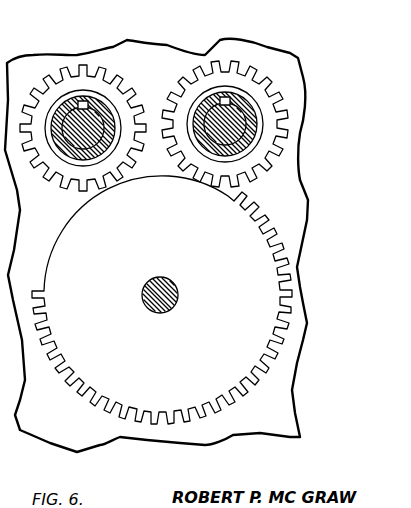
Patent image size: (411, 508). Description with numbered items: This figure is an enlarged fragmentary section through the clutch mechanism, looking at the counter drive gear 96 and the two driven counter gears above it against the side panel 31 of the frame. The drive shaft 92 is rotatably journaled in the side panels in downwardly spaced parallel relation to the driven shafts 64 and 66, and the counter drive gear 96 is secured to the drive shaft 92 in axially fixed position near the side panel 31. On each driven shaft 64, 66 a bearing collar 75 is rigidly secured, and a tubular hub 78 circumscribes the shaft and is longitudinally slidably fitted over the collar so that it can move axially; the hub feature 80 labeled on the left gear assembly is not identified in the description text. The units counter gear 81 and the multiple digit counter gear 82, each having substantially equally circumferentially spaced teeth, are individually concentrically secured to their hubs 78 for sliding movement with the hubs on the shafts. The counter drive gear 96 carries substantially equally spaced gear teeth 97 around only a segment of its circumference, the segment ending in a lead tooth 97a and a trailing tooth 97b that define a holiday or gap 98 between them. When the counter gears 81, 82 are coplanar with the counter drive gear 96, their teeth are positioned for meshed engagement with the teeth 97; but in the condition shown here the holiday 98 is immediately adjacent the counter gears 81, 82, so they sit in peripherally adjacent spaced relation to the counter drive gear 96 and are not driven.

The side panel 31 is at (272, 406).
The driven shaft 64 is at (62, 136).
The driven shaft 66 is at (186, 158).
The bearing collar 75 is at (74, 103).
The tubular hub 78 is at (85, 90).
The hub flange 80 is at (113, 108).
The units counter gear 81 is at (124, 97).
The multiple digit counter gear 82 is at (278, 90).
The drive shaft 92 is at (178, 295).
The counter drive gear 96 is at (290, 306).
The gear teeth 97 is at (217, 412).
The lead tooth 97a is at (238, 196).
The trailing tooth 97b is at (37, 297).
The holiday 98 is at (62, 214).